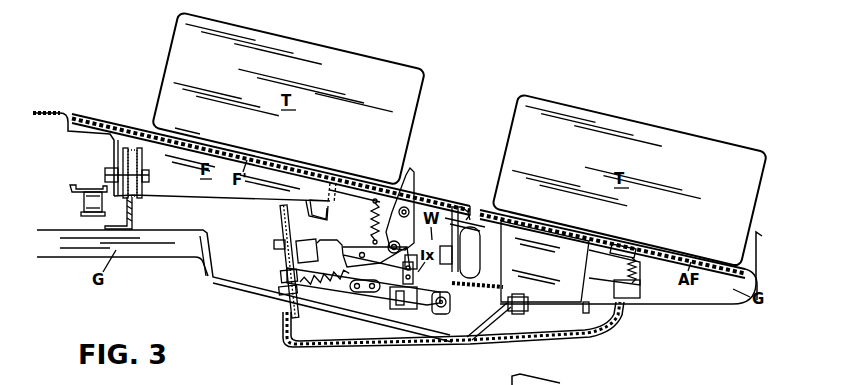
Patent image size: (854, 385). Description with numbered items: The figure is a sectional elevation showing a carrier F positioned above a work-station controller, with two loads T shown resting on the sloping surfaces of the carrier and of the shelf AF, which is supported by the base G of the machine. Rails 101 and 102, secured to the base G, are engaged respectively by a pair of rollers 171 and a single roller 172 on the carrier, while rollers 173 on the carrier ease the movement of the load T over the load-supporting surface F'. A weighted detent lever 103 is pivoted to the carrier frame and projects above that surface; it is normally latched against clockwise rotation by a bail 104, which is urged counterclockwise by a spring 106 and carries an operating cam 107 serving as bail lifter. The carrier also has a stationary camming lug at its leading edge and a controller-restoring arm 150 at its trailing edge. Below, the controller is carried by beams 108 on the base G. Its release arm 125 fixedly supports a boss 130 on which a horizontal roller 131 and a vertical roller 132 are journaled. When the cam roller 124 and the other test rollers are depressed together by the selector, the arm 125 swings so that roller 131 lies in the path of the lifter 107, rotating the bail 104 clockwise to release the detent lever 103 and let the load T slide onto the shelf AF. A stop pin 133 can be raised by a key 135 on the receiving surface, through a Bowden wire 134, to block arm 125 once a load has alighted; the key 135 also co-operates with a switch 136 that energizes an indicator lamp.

The rail 101 is at (133, 212).
The rail 102 is at (471, 283).
The detent lever 103 is at (409, 180).
The bail 104 is at (367, 262).
The spring 106 is at (371, 228).
The operating cam 107 is at (314, 238).
The beam 108 is at (223, 296).
The cam roller 124 is at (397, 308).
The release arm 125 is at (279, 276).
The boss 130 is at (283, 241).
The horizontal roller 131 is at (303, 250).
The vertical roller 132 is at (292, 211).
The stop pin 133 is at (283, 292).
The Bowden wire 134 is at (487, 345).
The key 135 is at (623, 240).
The switch 136 is at (553, 288).
The controller-restoring arm 150 is at (313, 212).
The roller 171 is at (140, 156).
The roller 172 is at (466, 212).
The roller 173 is at (189, 138).